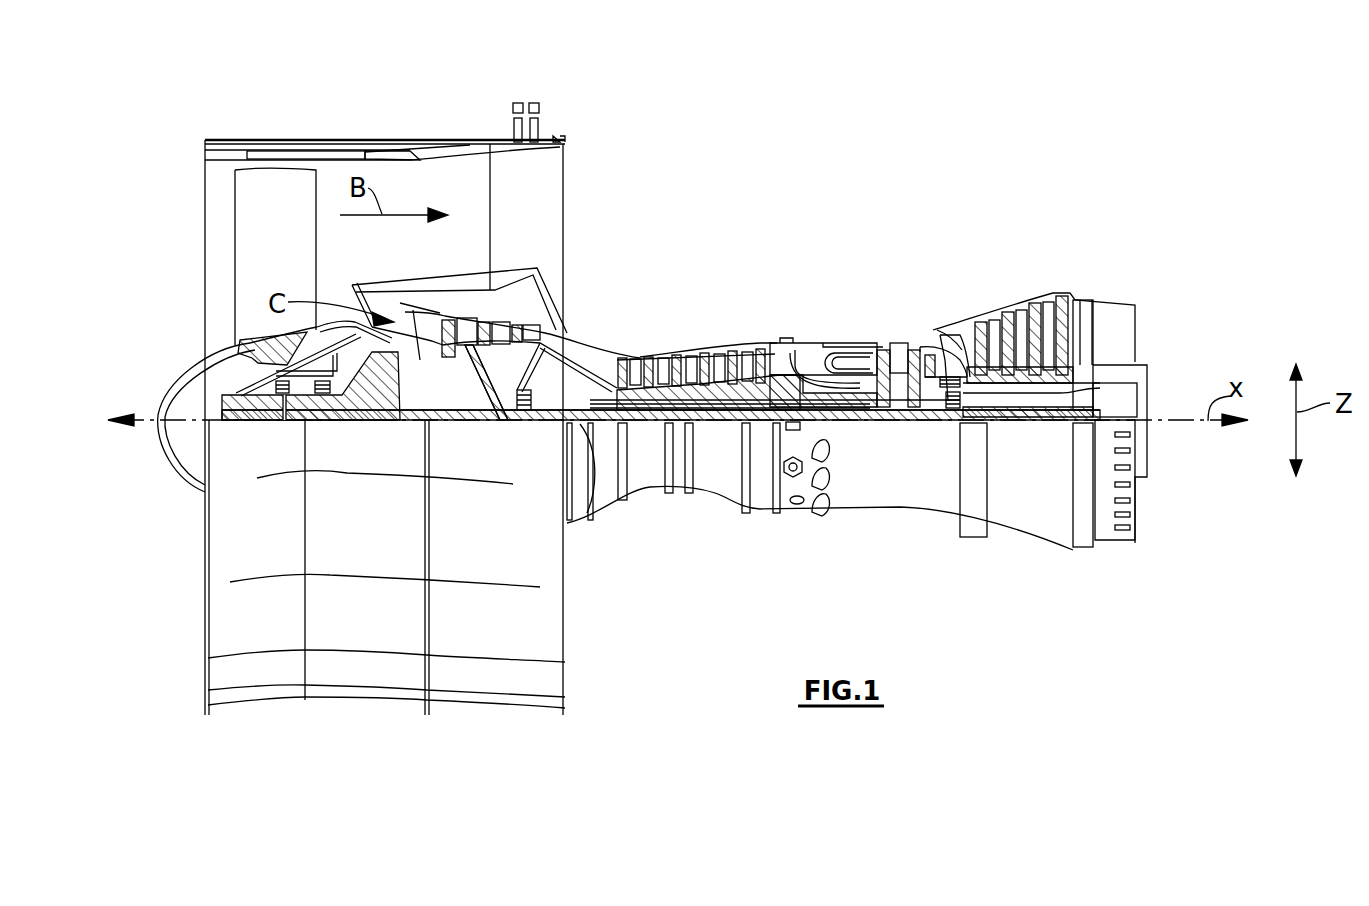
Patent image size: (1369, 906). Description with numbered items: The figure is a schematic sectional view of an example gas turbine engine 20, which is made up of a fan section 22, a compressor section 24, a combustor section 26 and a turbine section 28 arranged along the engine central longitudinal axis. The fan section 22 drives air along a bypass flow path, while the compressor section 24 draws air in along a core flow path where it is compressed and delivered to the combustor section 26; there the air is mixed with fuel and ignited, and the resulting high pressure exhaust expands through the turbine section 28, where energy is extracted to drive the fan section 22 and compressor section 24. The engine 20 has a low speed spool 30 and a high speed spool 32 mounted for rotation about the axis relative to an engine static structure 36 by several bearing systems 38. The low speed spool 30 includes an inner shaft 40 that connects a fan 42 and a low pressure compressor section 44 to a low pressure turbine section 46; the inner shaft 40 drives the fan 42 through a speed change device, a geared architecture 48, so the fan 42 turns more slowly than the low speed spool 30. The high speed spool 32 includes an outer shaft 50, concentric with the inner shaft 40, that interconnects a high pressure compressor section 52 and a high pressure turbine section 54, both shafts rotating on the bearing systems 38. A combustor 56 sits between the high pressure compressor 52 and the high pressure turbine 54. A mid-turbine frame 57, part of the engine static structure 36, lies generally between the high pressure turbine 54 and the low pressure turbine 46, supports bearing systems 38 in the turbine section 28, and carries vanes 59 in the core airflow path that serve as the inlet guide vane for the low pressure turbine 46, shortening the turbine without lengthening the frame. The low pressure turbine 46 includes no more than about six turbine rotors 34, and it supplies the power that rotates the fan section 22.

The gas turbine engine 20 is at (843, 188).
The fan section 22 is at (415, 102).
The compressor section 24 is at (772, 247).
The combustor section 26 is at (776, 247).
The turbine section 28 is at (882, 247).
The low speed spool 30 is at (720, 432).
The high speed spool 32 is at (760, 380).
The turbine rotors 34 is at (1040, 397).
The engine static structure 36 is at (761, 520).
The bearing systems 38 is at (281, 420).
The inner shaft 40 is at (587, 513).
The fan 42 is at (291, 270).
The low pressure compressor section 44 is at (500, 323).
The low pressure turbine section 46 is at (1023, 297).
The geared architecture 48 is at (396, 405).
The outer shaft 50 is at (837, 397).
The high pressure compressor section 52 is at (693, 390).
The high pressure turbine section 54 is at (893, 347).
The combustor 56 is at (833, 363).
The mid-turbine frame 57 is at (943, 328).
The vanes 59 is at (973, 393).